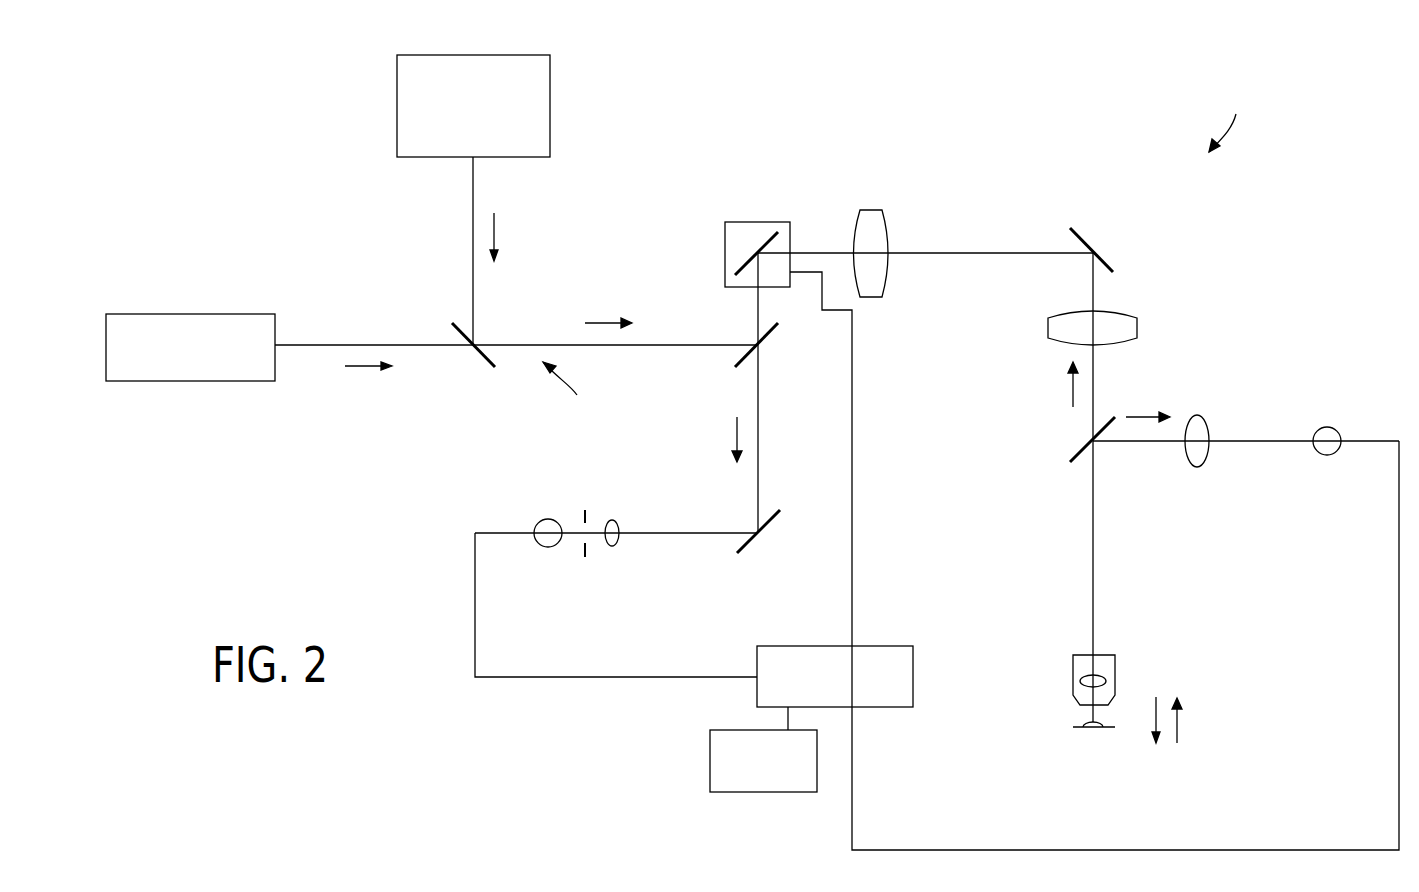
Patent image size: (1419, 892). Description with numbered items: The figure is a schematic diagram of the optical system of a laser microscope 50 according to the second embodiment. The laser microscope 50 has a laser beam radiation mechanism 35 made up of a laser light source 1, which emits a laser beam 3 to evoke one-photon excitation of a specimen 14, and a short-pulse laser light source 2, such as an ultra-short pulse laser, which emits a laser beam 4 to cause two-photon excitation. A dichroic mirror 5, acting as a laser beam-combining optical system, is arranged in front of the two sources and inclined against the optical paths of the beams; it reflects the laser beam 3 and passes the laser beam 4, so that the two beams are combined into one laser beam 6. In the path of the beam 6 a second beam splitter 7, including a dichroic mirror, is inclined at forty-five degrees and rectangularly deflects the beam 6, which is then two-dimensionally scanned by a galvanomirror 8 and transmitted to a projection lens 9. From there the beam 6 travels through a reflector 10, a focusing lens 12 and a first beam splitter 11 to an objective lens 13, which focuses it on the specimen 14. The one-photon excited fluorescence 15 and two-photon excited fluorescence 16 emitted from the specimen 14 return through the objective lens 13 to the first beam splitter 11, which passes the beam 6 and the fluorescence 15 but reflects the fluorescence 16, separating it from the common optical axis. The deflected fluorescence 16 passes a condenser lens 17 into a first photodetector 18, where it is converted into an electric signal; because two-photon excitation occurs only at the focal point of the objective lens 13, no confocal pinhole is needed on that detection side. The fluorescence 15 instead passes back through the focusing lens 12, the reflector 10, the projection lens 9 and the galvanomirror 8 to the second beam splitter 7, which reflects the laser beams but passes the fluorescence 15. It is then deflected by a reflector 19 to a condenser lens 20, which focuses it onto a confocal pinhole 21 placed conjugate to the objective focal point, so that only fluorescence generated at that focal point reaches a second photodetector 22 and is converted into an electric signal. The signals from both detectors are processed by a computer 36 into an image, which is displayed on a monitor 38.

The laser light source 1 is at (550, 103).
The short-pulse laser light source 2 is at (199, 314).
The laser beam 3 is at (503, 237).
The laser beam 4 is at (368, 381).
The dichroic mirror 5 is at (480, 372).
The laser beam 6 is at (873, 517).
The laser beam radiation mechanism 35 is at (578, 412).
The second beam splitter 7 is at (786, 337).
The galvanomirror 8 is at (765, 232).
The projection lens 9 is at (868, 208).
The reflector 10 is at (1080, 226).
The first beam splitter 11 is at (1075, 449).
The focusing lens 12 is at (1048, 326).
The objective lens 13 is at (1073, 668).
The specimen 14 is at (1145, 722).
The 1-photon excited fluorescence 15 is at (947, 571).
The 2-photon excited fluorescence 16 is at (1159, 598).
The condenser lens 17 is at (1197, 470).
The first photodetector 18 is at (1330, 456).
The reflector 19 is at (742, 557).
The condenser lens 20 is at (612, 548).
The confocal pinhole 21 is at (584, 560).
The second photodetector 22 is at (548, 548).
The computer 36 is at (895, 645).
The monitor 38 is at (710, 762).
The laser microscope 50 is at (1253, 108).